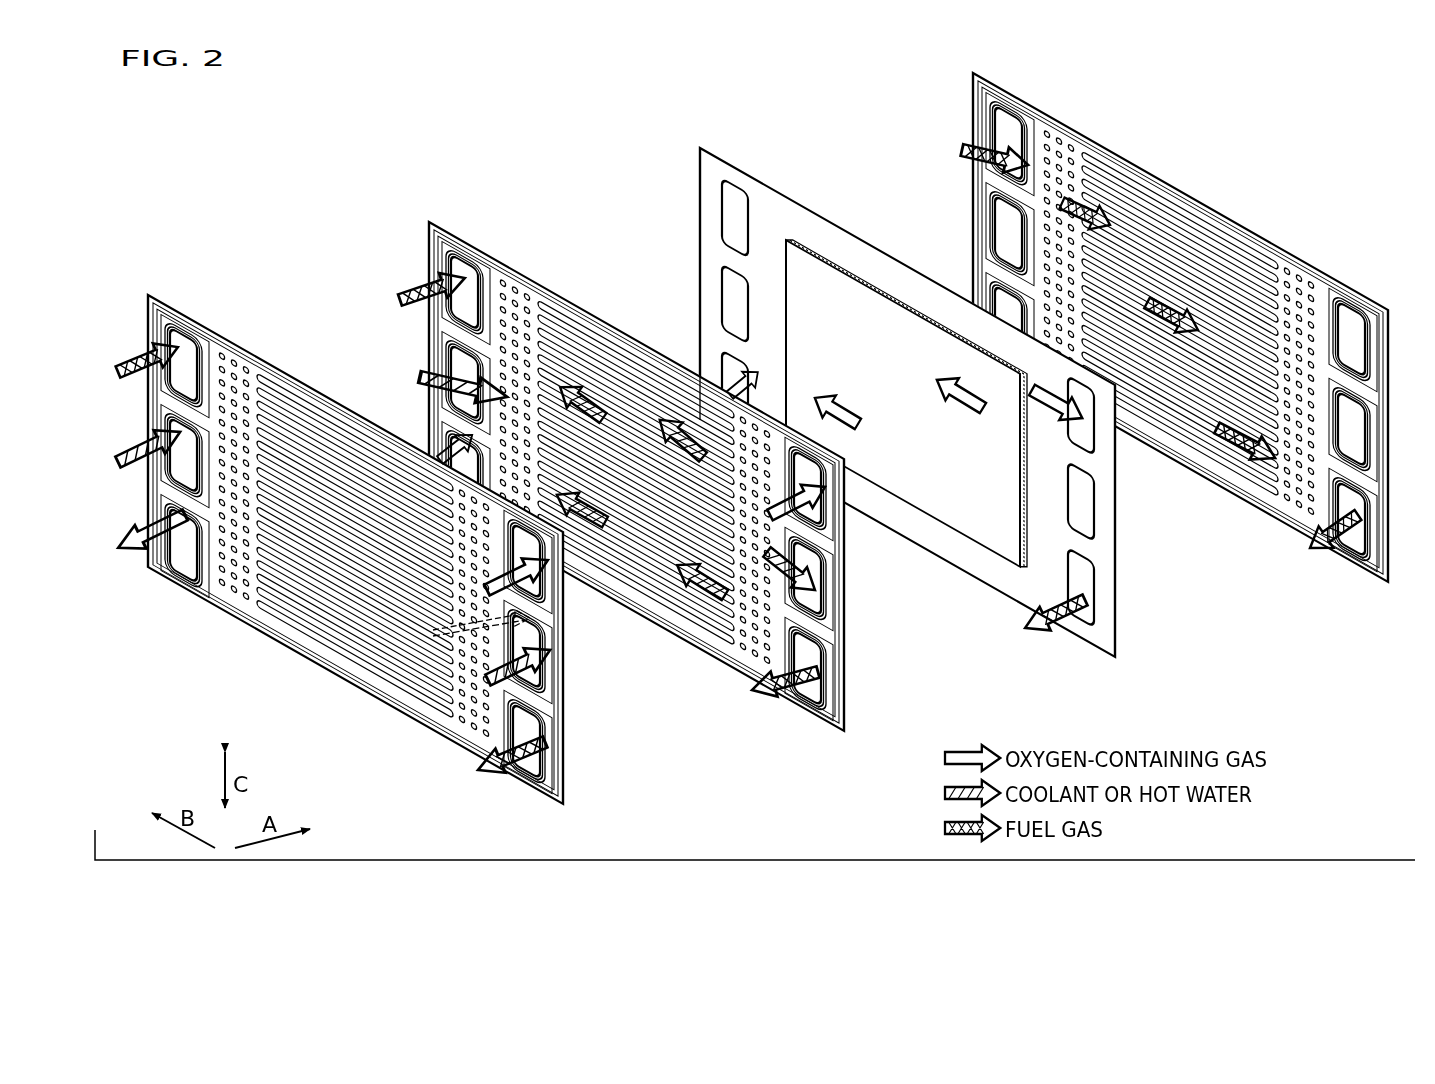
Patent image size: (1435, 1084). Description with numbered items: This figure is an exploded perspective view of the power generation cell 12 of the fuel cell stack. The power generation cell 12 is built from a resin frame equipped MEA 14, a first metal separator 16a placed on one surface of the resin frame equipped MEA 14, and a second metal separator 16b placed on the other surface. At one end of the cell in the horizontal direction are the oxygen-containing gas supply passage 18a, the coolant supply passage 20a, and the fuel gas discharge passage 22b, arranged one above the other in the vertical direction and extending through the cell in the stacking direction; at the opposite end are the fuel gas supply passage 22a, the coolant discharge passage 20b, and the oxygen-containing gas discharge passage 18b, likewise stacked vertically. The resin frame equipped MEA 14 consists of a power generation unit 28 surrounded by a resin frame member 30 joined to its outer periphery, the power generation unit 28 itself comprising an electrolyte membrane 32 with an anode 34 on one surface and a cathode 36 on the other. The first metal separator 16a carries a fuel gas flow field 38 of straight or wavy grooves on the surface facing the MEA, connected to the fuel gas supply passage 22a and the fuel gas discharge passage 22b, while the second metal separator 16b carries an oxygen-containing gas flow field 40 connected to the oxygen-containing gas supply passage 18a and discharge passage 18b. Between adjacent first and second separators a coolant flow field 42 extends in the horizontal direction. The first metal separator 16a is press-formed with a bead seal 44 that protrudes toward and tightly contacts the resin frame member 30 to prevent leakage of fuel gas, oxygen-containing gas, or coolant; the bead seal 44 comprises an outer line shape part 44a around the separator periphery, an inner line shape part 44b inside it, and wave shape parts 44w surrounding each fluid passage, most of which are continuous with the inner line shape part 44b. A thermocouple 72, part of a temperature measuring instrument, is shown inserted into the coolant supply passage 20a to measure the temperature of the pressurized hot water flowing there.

The power generation cell 12 is at (456, 108).
The resin frame equipped membrane electrode assembly 14 is at (698, 147).
The first metal separator 16a is at (148, 292).
The second metal separator 16b is at (428, 218).
The oxygen-containing gas supply passage 18a is at (537, 623).
The oxygen-containing gas discharge passage 18b is at (205, 565).
The coolant supply passage 20a is at (538, 675).
The coolant discharge passage 20b is at (183, 470).
The fuel gas supply passage 22a is at (190, 352).
The fuel gas discharge passage 22b is at (533, 727).
The power generation unit 28 is at (955, 510).
The resin frame member 30 is at (972, 555).
The electrolyte membrane 32 is at (937, 505).
The anode 34 is at (1033, 513).
The cathode 36 is at (902, 503).
The fuel gas flow field 38 is at (292, 597).
The oxygen-containing gas flow field 40 is at (593, 355).
The coolant flow field 42 is at (548, 337).
The bead seal 44 is at (438, 745).
The outer line shape part 44a is at (362, 690).
The inner line shape part 44b is at (427, 713).
The wave shape parts 44w is at (166, 383).
The thermocouple 72 is at (433, 636).